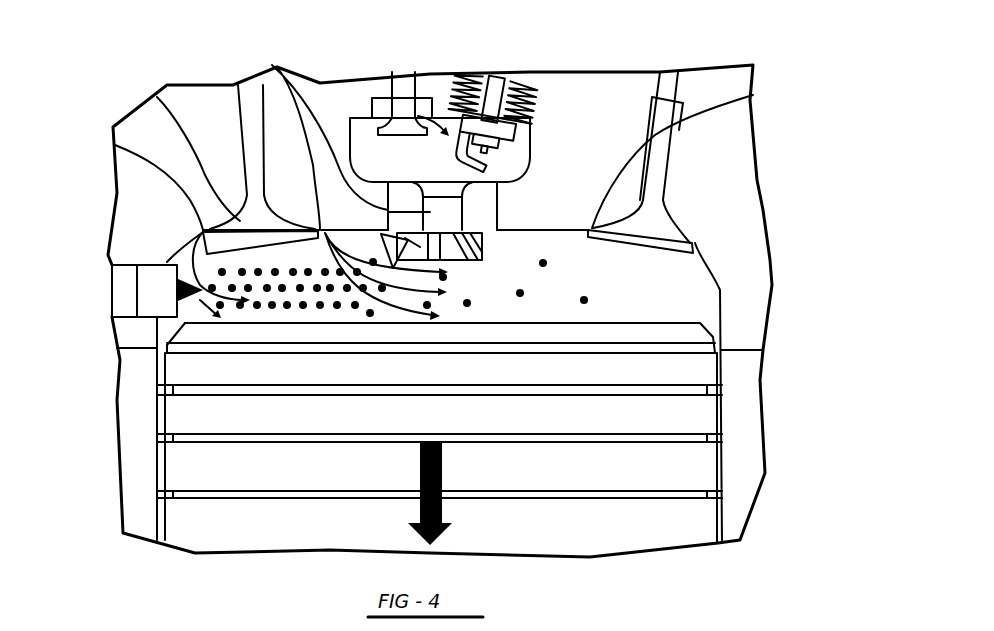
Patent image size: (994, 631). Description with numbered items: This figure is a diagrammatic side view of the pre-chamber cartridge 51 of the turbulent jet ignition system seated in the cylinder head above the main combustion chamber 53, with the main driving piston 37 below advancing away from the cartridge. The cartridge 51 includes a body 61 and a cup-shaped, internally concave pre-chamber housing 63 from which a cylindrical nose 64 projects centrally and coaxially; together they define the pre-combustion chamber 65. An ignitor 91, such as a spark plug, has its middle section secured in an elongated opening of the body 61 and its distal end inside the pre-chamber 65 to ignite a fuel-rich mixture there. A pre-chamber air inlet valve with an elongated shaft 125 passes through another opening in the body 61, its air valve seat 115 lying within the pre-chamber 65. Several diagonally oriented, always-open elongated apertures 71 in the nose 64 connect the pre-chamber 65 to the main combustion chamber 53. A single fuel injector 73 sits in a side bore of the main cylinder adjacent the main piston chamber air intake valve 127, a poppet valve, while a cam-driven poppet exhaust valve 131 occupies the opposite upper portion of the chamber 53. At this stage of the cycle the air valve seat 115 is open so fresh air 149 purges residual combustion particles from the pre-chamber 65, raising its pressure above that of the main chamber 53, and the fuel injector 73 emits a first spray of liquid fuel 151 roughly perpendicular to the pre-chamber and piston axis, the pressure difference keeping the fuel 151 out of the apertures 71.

The pre-chamber cartridge 51 is at (690, 18).
The main combustion chamber 53 is at (663, 293).
The main driving piston 37 is at (670, 323).
The body 61 is at (445, 80).
The pre-chamber housing 63 is at (525, 172).
The nose 64 is at (265, 113).
The pre-combustion chamber 65 is at (512, 162).
The apertures 71 is at (470, 232).
The fuel injector 73 is at (157, 283).
The ignitor 91 is at (517, 77).
The air valve seat 115 is at (387, 117).
The shaft 125 is at (397, 83).
The main piston chamber air intake valve 127 is at (157, 97).
The exhaust valve 131 is at (592, 230).
The fresh air 149 is at (357, 136).
The liquid fuel 151 is at (288, 307).